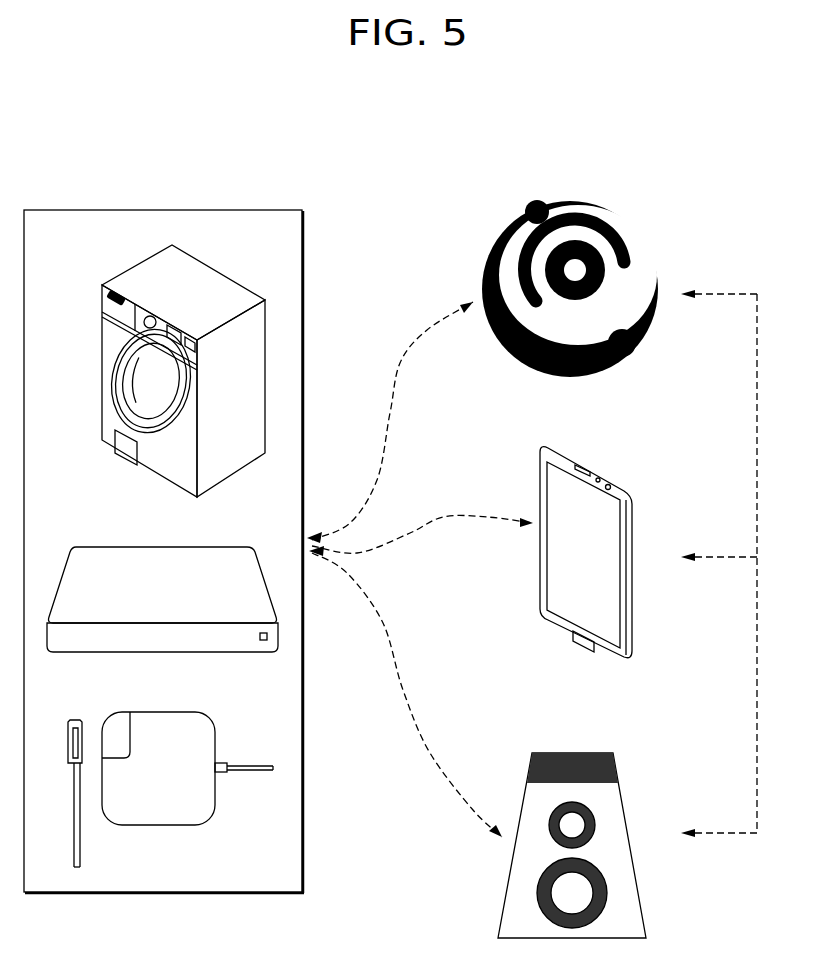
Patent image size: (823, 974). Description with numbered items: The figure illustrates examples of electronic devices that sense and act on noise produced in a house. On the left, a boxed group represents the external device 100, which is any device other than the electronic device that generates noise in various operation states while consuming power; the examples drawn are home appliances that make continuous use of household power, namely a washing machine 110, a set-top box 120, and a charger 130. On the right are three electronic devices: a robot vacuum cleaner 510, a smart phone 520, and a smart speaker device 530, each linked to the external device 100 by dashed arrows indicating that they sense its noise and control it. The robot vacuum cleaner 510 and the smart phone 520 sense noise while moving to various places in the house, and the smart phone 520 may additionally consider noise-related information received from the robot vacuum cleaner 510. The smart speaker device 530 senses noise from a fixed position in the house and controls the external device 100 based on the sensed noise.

The external device 100 is at (220, 210).
The washing machine 110 is at (127, 270).
The set-top box 120 is at (108, 562).
The charger 130 is at (207, 732).
The robot vacuum cleaner 510 is at (638, 259).
The smart phone 520 is at (615, 482).
The smart speaker device 530 is at (577, 753).